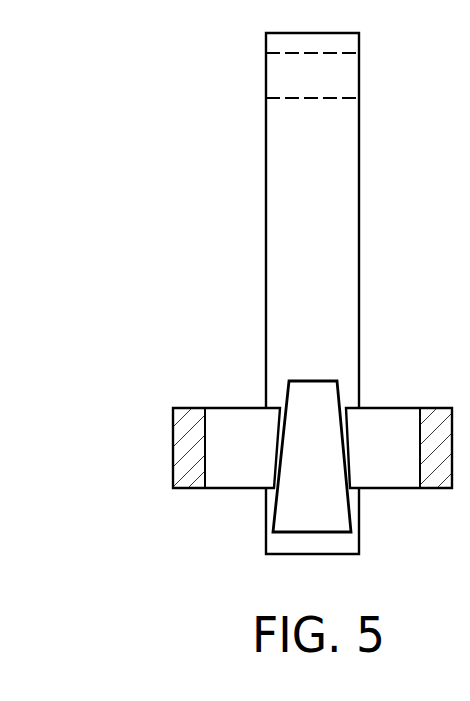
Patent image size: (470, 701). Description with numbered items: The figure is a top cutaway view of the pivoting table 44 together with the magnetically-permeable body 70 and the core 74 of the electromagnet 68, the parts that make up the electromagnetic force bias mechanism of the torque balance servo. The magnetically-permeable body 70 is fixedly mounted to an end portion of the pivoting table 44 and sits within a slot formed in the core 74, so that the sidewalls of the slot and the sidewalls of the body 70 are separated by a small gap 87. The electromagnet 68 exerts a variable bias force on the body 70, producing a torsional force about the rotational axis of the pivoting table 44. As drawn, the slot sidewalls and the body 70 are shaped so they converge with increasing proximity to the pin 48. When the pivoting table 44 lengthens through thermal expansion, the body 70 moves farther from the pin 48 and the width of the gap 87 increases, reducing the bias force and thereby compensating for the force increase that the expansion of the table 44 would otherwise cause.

The pivoting table 44 is at (332, 164).
The pin 48 is at (347, 75).
The electromagnet 68 is at (178, 397).
The magnetically-permeable body 70 is at (332, 481).
The magnetically-permeable core 74 is at (252, 466).
The gap 87 is at (277, 490).